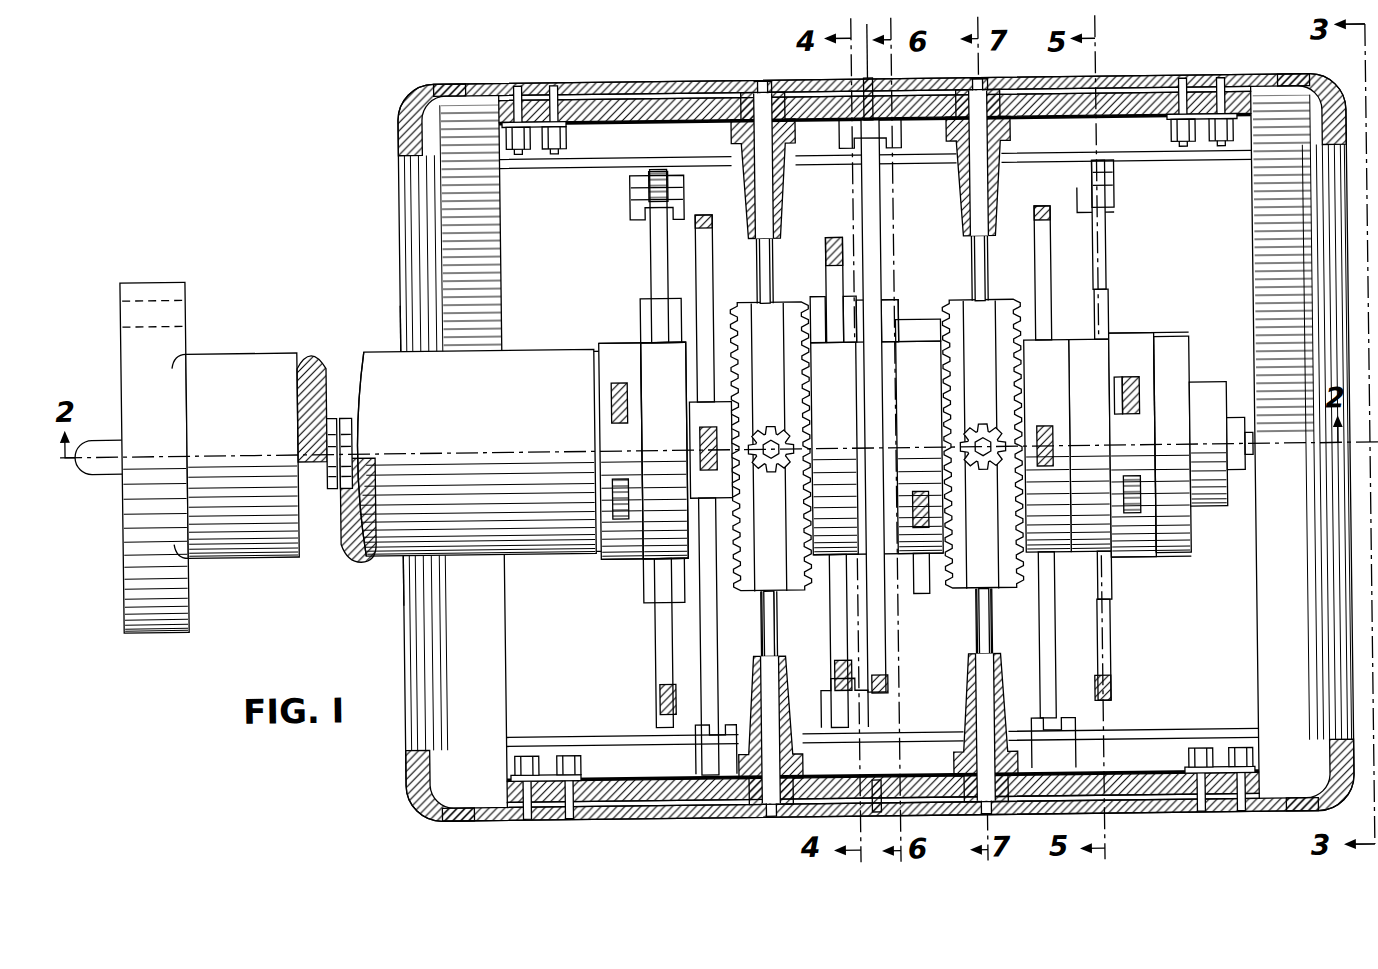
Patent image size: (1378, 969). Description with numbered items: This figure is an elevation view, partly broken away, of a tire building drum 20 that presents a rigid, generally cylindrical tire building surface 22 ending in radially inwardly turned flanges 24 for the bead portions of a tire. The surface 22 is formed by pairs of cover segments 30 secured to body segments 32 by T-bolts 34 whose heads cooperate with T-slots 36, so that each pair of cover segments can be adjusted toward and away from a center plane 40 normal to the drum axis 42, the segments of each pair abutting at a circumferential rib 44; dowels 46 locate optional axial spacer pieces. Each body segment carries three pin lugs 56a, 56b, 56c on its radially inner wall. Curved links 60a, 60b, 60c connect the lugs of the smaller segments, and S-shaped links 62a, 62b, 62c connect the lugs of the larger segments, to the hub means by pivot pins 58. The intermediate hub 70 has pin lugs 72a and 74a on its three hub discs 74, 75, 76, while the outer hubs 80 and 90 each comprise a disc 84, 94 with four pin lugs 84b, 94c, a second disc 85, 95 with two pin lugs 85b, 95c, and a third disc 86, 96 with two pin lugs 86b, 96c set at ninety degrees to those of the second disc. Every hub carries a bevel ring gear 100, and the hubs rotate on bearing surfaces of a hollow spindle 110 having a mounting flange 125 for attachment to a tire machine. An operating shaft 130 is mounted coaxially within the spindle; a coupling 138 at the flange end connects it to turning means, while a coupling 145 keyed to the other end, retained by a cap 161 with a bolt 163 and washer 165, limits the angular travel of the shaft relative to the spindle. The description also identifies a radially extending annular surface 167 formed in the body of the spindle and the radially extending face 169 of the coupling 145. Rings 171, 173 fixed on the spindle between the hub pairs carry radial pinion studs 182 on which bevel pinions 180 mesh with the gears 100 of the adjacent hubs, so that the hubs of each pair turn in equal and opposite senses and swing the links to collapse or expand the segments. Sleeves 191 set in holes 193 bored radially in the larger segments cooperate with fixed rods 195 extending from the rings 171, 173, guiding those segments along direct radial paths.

The tire building drum 20 is at (410, 108).
The tire building surface 22 is at (540, 88).
The flanges 24 is at (410, 120).
The cover segments 30 is at (660, 76).
The body segments 32 is at (668, 122).
The T-bolts 34 is at (556, 148).
The T-slots 36 is at (462, 86).
The center plane 40 is at (872, 50).
The drum axis 42 is at (458, 450).
The circumferential rib 44 is at (880, 84).
The dowels 46 is at (866, 82).
The pin lug 56a is at (888, 158).
The pin lug 56b is at (652, 212).
The pin lug 56c is at (1105, 215).
The pivot pins 58 is at (1118, 172).
The link 60a is at (838, 238).
The link 60b is at (660, 248).
The link 60c is at (1100, 165).
The link 62a is at (883, 252).
The link 62b is at (707, 214).
The link 62c is at (1043, 216).
The intermediate hub 70 is at (888, 590).
The pin lugs 72a is at (882, 300).
The hub disc 74 is at (845, 365).
The pin lugs 74a is at (820, 300).
The hub disc 75 is at (893, 340).
The hub disc 76 is at (920, 360).
The hub 80 is at (605, 565).
The disc 84 is at (700, 390).
The pin lugs 84b is at (700, 420).
The second hub disc 85 is at (662, 540).
The pin lugs 85b is at (648, 322).
The third disc 86 is at (604, 548).
The pin lugs 86b is at (612, 428).
The hub 90 is at (1128, 332).
The disc 94 is at (1050, 376).
The pin lugs 94c is at (1037, 430).
The second hub disc 95 is at (1100, 528).
The pin lugs 95c is at (1103, 295).
The third disc 96 is at (1150, 545).
The pin lugs 96c is at (1145, 425).
The bevel ring gear 100 is at (803, 403).
The hollow spindle 110 is at (340, 358).
The mounting flange 125 is at (190, 285).
The operating shaft 130 is at (345, 440).
The coupling 138 is at (96, 466).
The coupling 145 is at (1200, 556).
The cap 161 is at (1227, 512).
The bolt 163 is at (1243, 462).
The washer 165 is at (1250, 470).
The annular surface 167 is at (598, 345).
The radially extending face 169 is at (1156, 345).
The ring 171 is at (768, 590).
The ring 173 is at (982, 325).
The bevel pinions 180 is at (793, 438).
The pinion studs 182 is at (770, 460).
The sleeve 191 is at (782, 190).
The hole 193 is at (766, 90).
The fixed rods 195 is at (762, 262).